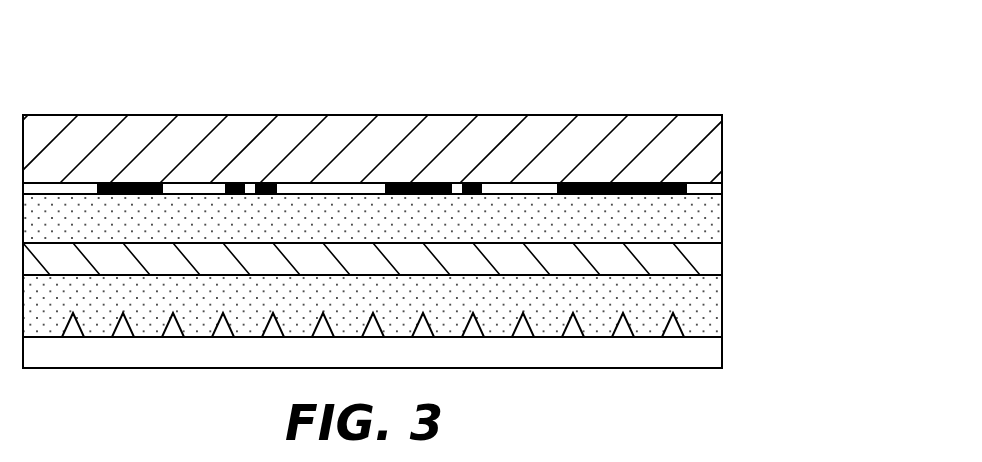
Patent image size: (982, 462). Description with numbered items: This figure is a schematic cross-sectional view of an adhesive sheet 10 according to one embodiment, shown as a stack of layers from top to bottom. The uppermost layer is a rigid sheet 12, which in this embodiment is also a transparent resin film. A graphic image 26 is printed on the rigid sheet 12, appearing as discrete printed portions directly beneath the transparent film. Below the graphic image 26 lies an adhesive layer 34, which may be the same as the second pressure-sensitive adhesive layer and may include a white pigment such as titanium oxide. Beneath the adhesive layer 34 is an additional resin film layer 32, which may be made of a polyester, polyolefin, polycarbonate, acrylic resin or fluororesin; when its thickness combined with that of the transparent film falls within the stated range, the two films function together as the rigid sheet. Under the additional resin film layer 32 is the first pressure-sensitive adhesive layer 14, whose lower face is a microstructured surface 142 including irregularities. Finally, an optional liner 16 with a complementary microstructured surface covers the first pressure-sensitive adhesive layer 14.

The adhesive sheet 10 is at (662, 90).
The rigid sheet 12 is at (705, 161).
The graphic image 26 is at (143, 183).
The adhesive layer 34 is at (705, 223).
The additional resin film layer 32 is at (705, 265).
The first pressure-sensitive adhesive layer 14 is at (705, 315).
The microstructured surface 142 is at (598, 338).
The liner 16 is at (705, 356).